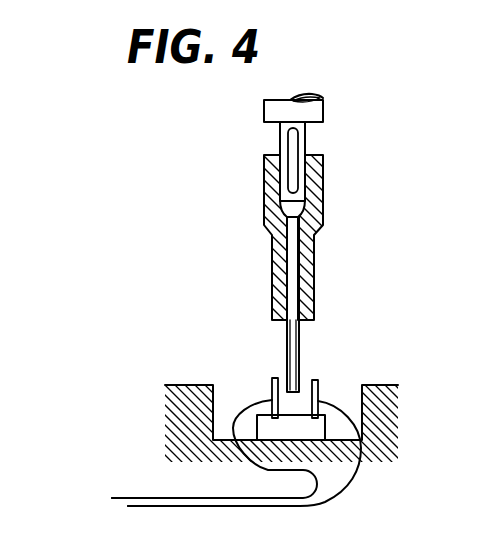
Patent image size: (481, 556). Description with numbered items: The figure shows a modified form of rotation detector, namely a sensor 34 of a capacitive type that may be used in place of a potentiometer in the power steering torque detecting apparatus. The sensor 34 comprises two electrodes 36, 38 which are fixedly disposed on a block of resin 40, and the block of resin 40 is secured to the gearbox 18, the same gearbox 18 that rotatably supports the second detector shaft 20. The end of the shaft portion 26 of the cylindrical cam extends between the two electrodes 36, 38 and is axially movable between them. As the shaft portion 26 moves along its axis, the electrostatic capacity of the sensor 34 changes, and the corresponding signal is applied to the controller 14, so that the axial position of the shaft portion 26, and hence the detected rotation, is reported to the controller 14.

The controller 14 is at (197, 490).
The gearbox 18 is at (190, 385).
The second detector shaft 20 is at (316, 205).
The shaft portion 26 is at (298, 137).
The sensor 34 is at (345, 385).
The electrode 36 is at (318, 384).
The electrode 38 is at (276, 378).
The block of resin 40 is at (353, 480).